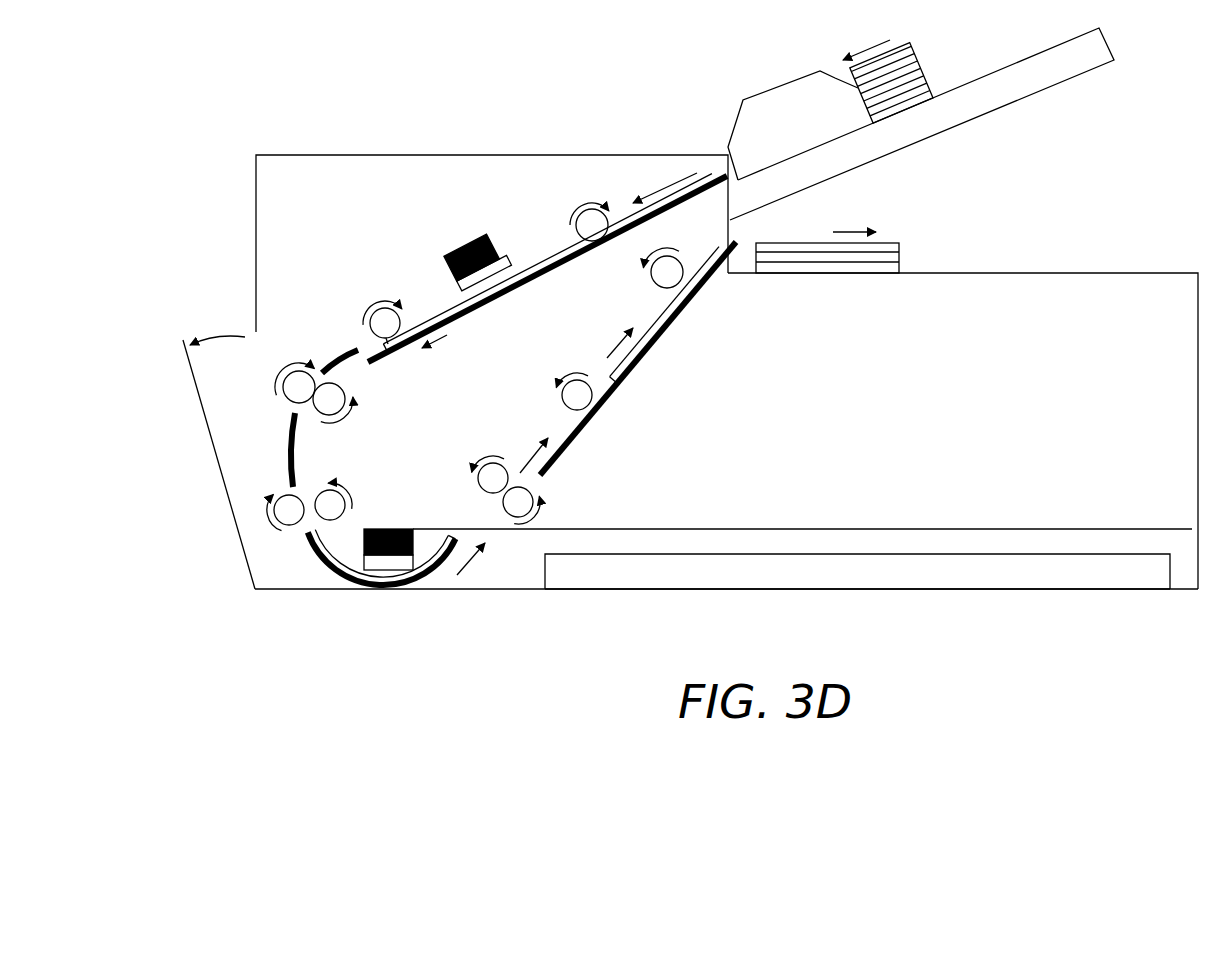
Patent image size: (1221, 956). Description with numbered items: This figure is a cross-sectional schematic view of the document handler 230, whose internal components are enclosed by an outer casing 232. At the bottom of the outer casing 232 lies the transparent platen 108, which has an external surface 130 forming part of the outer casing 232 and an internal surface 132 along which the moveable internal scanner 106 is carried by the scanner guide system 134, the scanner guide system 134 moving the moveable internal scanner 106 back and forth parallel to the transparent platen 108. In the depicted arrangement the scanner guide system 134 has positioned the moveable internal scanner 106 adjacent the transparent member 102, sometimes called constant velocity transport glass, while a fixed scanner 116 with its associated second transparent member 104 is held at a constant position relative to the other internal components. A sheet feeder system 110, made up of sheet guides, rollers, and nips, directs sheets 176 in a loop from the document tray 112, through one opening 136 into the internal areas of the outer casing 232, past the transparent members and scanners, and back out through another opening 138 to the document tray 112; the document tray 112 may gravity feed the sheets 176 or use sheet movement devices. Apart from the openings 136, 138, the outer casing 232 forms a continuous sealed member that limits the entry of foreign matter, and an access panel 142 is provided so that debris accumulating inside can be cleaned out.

The transparent member 102 is at (362, 557).
The second transparent member 104 is at (456, 283).
The moveable internal scanner 106 is at (400, 528).
The transparent platen 108 is at (815, 590).
The sheet feeder system 110 is at (557, 258).
The document tray 112 is at (1037, 52).
The fixed scanner 116 is at (465, 245).
The external surface 130 is at (1025, 590).
The internal surface 132 is at (1088, 554).
The scanner guide system 134 is at (1003, 528).
The opening 136 is at (717, 170).
The opening 138 is at (740, 236).
The access panel 142 is at (212, 438).
The sheets 176 is at (927, 60).
The document handler 230 is at (525, 140).
The outer casing 232 is at (377, 155).